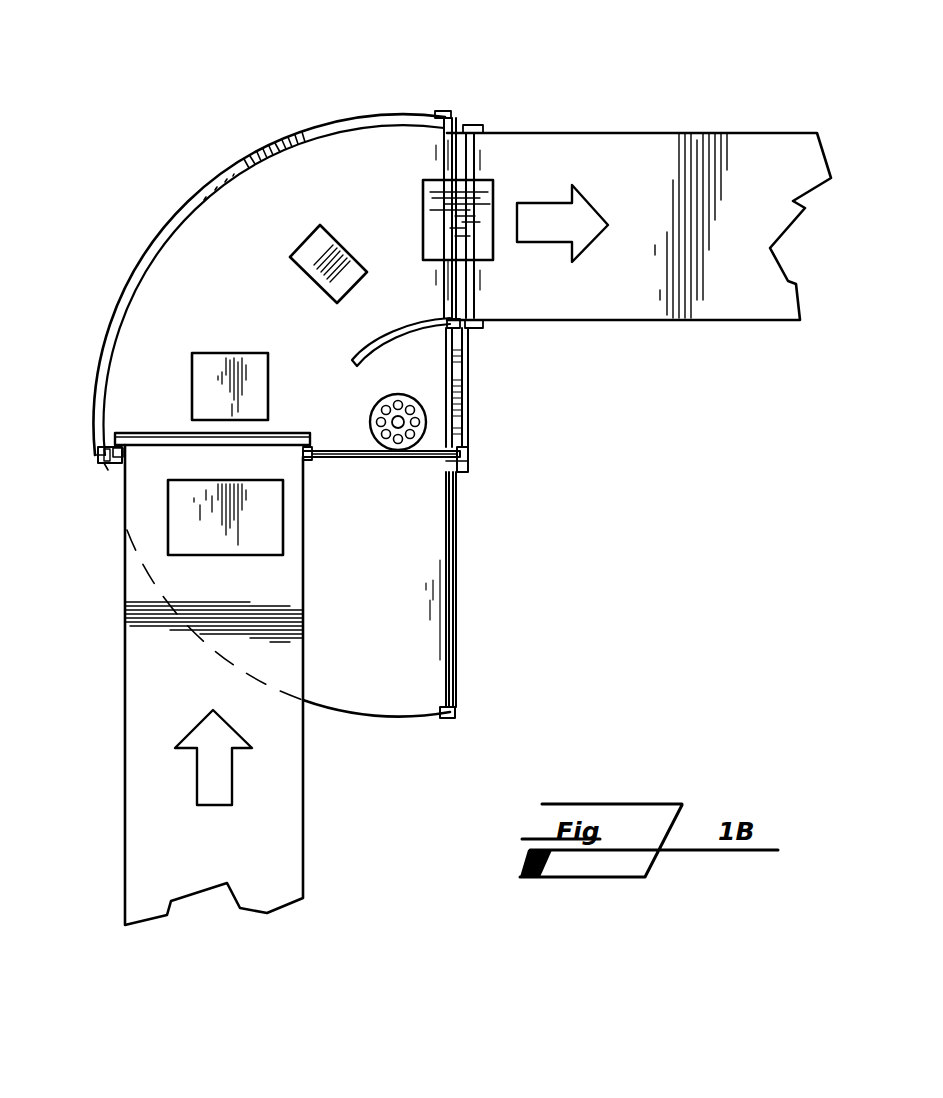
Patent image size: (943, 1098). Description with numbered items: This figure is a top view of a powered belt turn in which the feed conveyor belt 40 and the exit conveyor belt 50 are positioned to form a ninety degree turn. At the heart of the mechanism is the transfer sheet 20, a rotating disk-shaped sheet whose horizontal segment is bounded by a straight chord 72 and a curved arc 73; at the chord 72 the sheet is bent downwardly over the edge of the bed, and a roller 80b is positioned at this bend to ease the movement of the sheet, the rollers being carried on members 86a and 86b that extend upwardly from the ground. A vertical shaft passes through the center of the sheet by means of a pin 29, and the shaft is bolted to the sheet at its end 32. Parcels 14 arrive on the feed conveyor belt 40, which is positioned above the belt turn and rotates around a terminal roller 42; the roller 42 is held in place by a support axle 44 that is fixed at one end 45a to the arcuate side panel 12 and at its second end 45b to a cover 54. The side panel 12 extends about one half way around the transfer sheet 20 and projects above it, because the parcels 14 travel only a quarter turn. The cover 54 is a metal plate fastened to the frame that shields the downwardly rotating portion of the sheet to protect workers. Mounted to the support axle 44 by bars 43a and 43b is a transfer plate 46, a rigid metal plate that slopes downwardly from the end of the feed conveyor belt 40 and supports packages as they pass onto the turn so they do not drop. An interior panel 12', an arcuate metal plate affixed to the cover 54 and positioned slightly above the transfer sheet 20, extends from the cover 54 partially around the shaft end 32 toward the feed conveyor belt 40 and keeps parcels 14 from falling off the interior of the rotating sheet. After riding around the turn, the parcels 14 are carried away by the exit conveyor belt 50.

The arcuate side panel 12 is at (269, 246).
The interior panel 12' is at (373, 340).
The parcels 14 is at (488, 195).
The transfer sheet 20 is at (417, 673).
The pin 29 is at (398, 428).
The end of shaft 32 is at (413, 400).
The feed conveyor belt 40 is at (155, 848).
The terminal roller 42 is at (123, 452).
The bar 43a is at (100, 447).
The bar 43b is at (313, 444).
The support axle 44 is at (343, 460).
The first end of support axle 45a is at (108, 470).
The second end of support axle 45b is at (467, 462).
The transfer plate 46 is at (143, 443).
The exit conveyor belt 50 is at (617, 310).
The cover 54 is at (463, 440).
The chord 72 is at (455, 590).
The arc 73 is at (353, 717).
The roller 80b is at (453, 717).
The support member 86a is at (451, 722).
The support member 86b is at (440, 111).